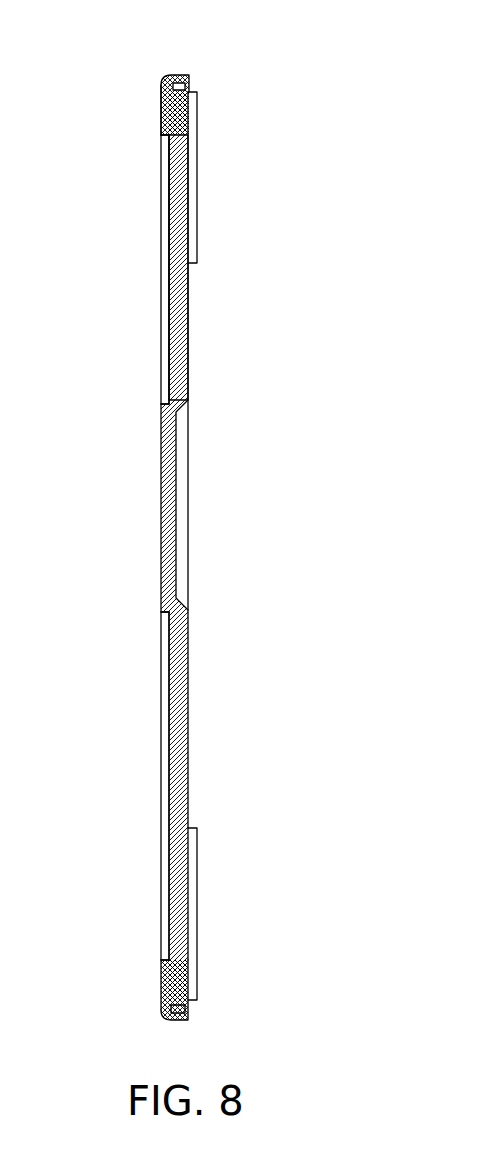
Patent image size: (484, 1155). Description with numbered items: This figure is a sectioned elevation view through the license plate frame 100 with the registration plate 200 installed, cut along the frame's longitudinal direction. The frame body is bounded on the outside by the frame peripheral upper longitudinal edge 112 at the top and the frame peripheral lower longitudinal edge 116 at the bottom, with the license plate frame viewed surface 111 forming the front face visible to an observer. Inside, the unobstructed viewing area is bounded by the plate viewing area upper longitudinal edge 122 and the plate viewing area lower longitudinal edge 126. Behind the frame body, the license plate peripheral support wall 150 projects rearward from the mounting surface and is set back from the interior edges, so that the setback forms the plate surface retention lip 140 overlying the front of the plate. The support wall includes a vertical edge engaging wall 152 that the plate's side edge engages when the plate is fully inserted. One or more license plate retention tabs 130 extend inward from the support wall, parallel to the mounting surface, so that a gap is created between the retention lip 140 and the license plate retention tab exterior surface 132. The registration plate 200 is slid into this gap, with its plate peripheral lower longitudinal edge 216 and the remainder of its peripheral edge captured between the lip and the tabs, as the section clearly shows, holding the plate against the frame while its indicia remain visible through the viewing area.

The license plate frame 100 is at (138, 74).
The frame peripheral upper longitudinal edge 112 is at (176, 76).
The plate peripheral lower longitudinal edge 216 is at (186, 82).
The license plate frame viewed surface 111 is at (162, 112).
The vertical edge engaging wall 152 is at (183, 112).
The plate viewing area upper longitudinal edge 122 is at (165, 150).
The plate surface retention lip 140 is at (185, 126).
The license plate retention tab exterior surface 132 is at (178, 192).
The license plate retention tab 130 is at (190, 268).
The registration plate 200 is at (197, 359).
The plate viewing area lower longitudinal edge 126 is at (165, 960).
The license plate peripheral support wall 150 is at (188, 1012).
The frame peripheral lower longitudinal edge 116 is at (178, 1022).